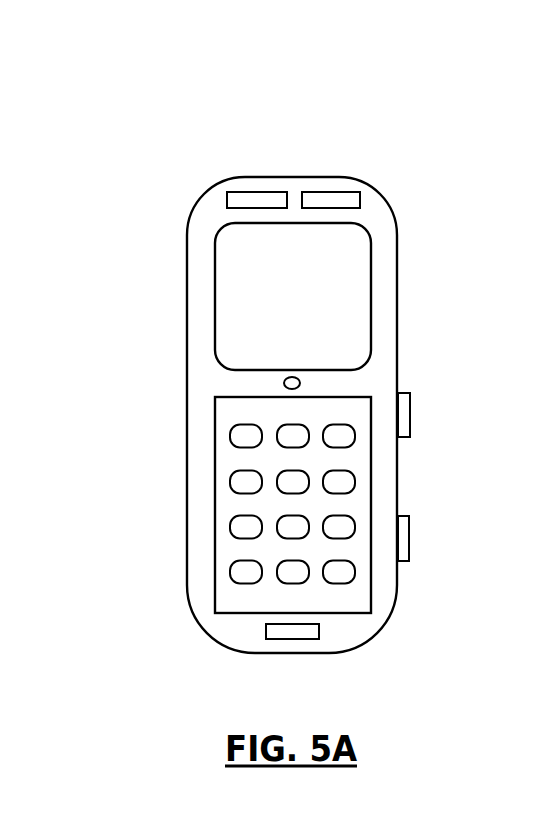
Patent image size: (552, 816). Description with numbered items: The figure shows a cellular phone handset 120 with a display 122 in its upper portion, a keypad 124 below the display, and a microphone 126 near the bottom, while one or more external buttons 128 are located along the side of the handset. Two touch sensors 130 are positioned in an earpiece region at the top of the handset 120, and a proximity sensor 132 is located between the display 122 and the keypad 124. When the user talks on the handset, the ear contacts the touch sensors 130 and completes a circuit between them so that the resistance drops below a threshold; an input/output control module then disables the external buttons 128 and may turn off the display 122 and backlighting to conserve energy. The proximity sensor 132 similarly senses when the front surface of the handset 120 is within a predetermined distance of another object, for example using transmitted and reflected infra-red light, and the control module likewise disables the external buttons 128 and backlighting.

The cellular phone handset 120 is at (220, 96).
The display 122 is at (215, 297).
The keypad 124 is at (215, 503).
The microphone 126 is at (266, 631).
The external buttons 128 is at (410, 414).
The touch sensors 130 is at (255, 192).
The proximity sensor 132 is at (300, 383).